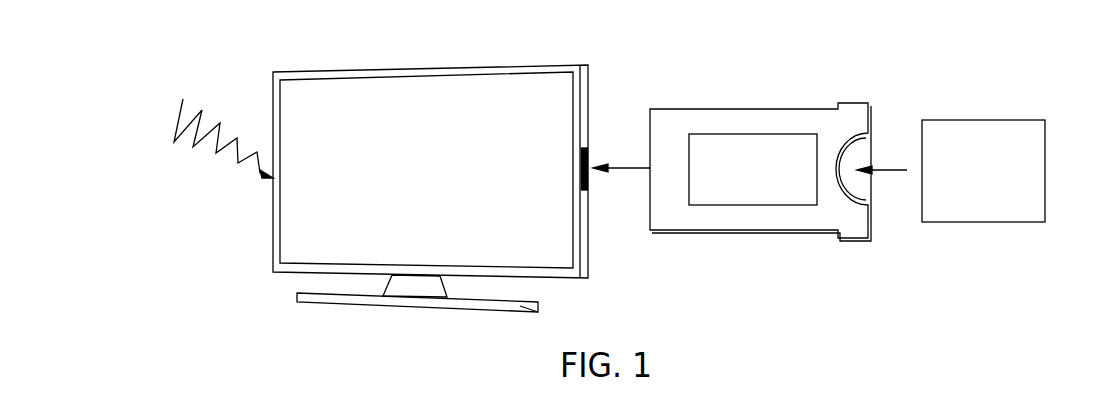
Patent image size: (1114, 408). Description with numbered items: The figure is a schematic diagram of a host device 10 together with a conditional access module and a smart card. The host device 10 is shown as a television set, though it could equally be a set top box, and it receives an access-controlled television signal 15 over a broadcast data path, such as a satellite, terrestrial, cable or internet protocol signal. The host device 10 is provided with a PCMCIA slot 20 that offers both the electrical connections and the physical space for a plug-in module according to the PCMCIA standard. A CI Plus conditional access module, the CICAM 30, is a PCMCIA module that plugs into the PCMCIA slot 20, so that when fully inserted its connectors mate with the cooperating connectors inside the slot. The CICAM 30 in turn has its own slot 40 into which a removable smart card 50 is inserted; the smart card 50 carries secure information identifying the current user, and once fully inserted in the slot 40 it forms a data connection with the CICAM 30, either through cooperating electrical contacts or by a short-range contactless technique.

The host device 10 is at (460, 72).
The access-controlled television signal 15 is at (205, 143).
The PCMCIA slot 20 is at (590, 163).
The CICAM 30 is at (765, 122).
The slot 40 is at (845, 163).
The smart card 50 is at (990, 120).